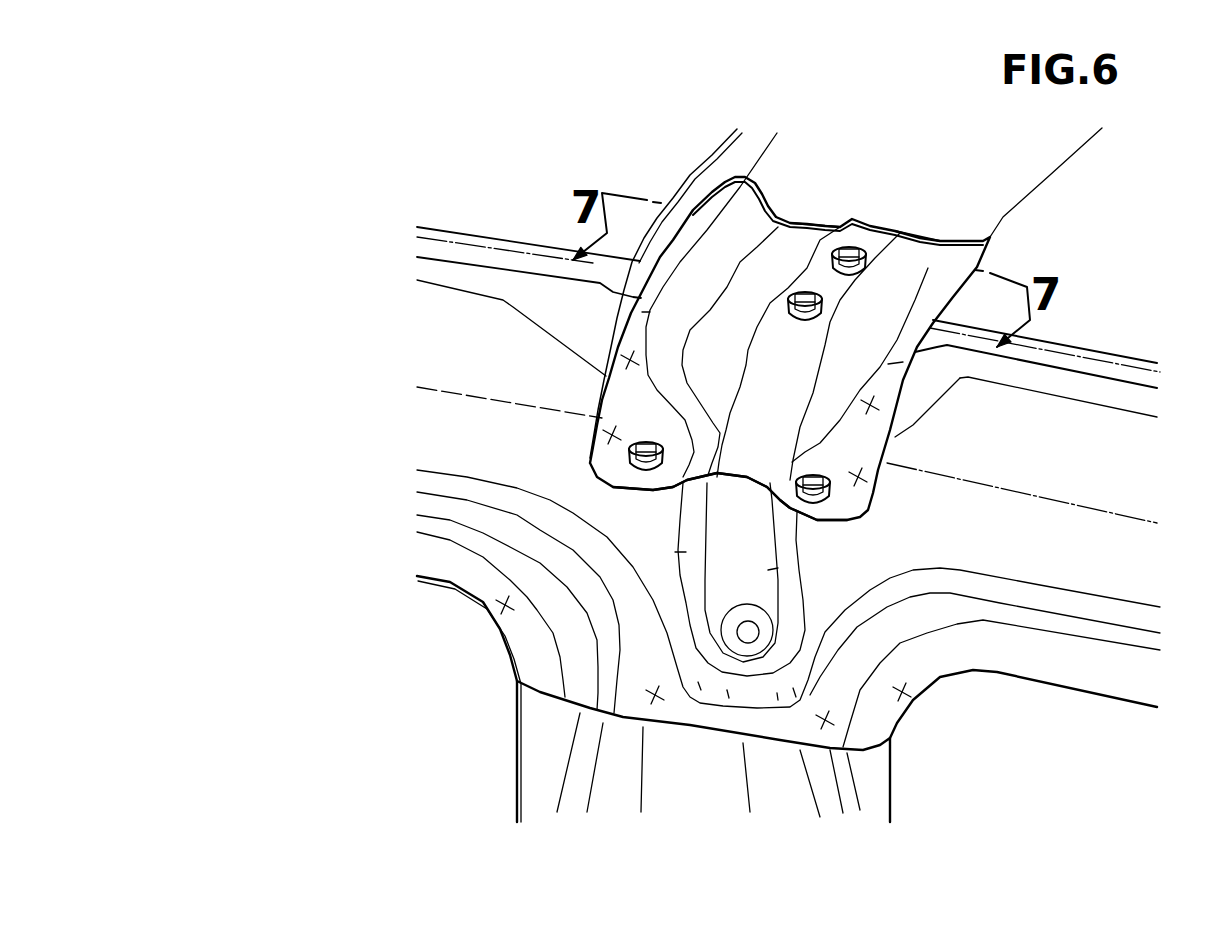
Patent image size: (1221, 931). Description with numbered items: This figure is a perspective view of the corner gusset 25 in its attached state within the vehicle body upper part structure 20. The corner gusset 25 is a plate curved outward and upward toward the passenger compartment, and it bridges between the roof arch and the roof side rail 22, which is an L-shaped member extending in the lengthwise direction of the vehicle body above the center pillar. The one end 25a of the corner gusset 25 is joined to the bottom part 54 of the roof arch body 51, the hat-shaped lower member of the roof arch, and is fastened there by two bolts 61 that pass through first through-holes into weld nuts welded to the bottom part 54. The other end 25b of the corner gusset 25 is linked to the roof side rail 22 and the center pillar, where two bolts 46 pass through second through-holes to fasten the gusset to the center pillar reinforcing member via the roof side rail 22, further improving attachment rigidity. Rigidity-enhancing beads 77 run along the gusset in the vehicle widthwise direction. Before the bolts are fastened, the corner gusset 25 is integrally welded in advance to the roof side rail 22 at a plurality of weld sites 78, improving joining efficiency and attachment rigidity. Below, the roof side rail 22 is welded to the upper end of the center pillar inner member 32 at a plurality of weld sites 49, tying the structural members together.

The vehicle body upper part structure 20 is at (313, 116).
The roof side rail 22 is at (1065, 418).
The corner gusset 25 is at (693, 212).
The one end of the corner gusset 25a is at (878, 222).
The other end of the corner gusset 25b is at (695, 484).
The center pillar inner member 32 is at (897, 795).
The bolts 46 is at (628, 462).
The weld sites 49 is at (500, 608).
The roof arch body 51 is at (715, 142).
The bottom part 54 is at (822, 170).
The bolts 61 is at (855, 272).
The rigidity-enhancing beads 77 is at (815, 223).
The weld sites 78 is at (626, 362).